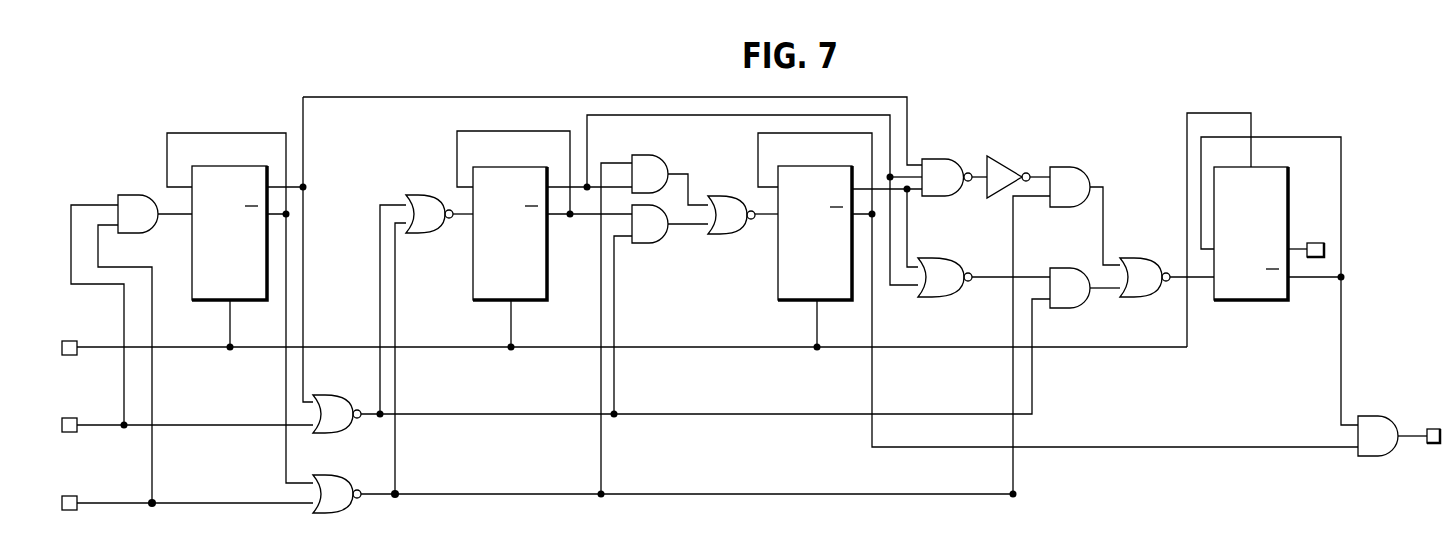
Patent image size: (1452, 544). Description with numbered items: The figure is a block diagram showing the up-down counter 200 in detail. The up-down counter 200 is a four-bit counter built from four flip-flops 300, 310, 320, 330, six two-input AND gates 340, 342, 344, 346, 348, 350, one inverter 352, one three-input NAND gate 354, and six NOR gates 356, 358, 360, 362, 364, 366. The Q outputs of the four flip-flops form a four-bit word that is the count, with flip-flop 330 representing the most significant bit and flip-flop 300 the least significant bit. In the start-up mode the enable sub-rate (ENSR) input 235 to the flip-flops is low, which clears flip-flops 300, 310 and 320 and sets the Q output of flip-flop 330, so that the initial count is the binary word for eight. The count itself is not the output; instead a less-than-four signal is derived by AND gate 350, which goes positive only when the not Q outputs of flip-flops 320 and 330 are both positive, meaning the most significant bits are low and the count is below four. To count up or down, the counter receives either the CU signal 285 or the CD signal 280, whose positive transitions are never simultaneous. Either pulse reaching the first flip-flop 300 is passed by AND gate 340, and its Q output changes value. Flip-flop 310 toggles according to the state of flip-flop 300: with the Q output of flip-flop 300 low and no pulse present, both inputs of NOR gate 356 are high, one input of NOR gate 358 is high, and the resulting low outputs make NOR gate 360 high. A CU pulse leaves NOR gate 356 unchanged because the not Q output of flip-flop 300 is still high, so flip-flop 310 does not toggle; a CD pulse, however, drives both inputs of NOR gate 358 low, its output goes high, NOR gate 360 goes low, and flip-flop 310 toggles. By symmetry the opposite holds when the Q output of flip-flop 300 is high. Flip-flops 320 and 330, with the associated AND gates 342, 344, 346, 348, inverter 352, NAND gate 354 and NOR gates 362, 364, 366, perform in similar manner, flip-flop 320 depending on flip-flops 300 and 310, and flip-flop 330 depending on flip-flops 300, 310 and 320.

The up-down counter 200 is at (1058, 88).
The enable sub-rate (ENSR) input 235 is at (105, 349).
The CD signal 280 is at (108, 427).
The CU signal 285 is at (112, 505).
The flip-flop 300 is at (228, 166).
The flip-flop 310 is at (519, 167).
The flip-flop 320 is at (828, 166).
The flip-flop 330 is at (1240, 300).
The AND gate 340 is at (128, 195).
The AND gate 342 is at (652, 156).
The AND gate 344 is at (662, 243).
The AND gate 346 is at (1082, 167).
The AND gate 348 is at (1070, 308).
The AND gate 350 is at (1405, 416).
The inverter 352 is at (1008, 168).
The three-input NAND gate 354 is at (942, 159).
The NOR gate 356 is at (322, 513).
The NOR gate 358 is at (352, 375).
The NOR gate 360 is at (418, 195).
The NOR gate 362 is at (718, 234).
The NOR gate 364 is at (945, 298).
The NOR gate 366 is at (1155, 236).